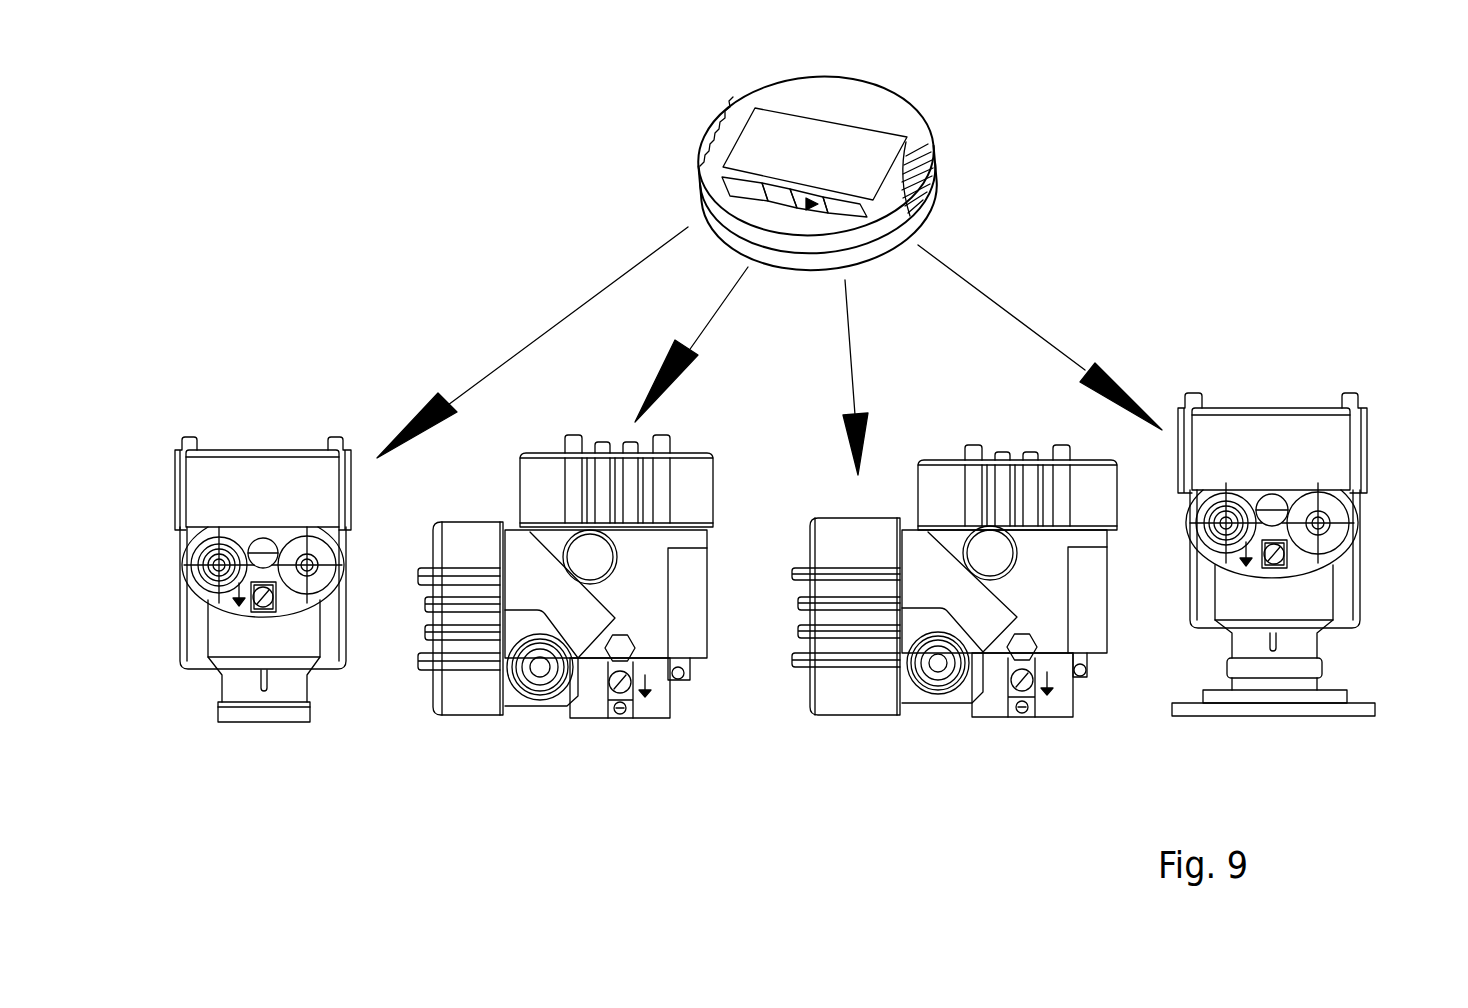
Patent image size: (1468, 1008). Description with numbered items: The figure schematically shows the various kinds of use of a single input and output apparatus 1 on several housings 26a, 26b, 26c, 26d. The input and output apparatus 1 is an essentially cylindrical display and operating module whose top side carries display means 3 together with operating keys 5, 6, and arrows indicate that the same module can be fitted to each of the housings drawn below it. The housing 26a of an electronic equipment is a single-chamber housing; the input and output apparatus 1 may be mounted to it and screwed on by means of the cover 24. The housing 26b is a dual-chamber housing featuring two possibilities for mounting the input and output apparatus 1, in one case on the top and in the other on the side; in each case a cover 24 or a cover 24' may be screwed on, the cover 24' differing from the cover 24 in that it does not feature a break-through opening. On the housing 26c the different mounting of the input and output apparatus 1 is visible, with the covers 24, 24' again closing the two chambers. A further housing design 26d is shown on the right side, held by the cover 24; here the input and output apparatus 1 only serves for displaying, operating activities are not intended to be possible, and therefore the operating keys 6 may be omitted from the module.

The input and output apparatus 1 is at (942, 140).
The display means 3 is at (872, 150).
The operating keys 5 is at (870, 206).
The operating keys 6 is at (920, 222).
The cover 24 is at (775, 595).
The cover 24' is at (767, 586).
The housing 26a is at (252, 705).
The housing 26b is at (648, 698).
The housing 26c is at (1044, 698).
The housing design 26d is at (1285, 665).